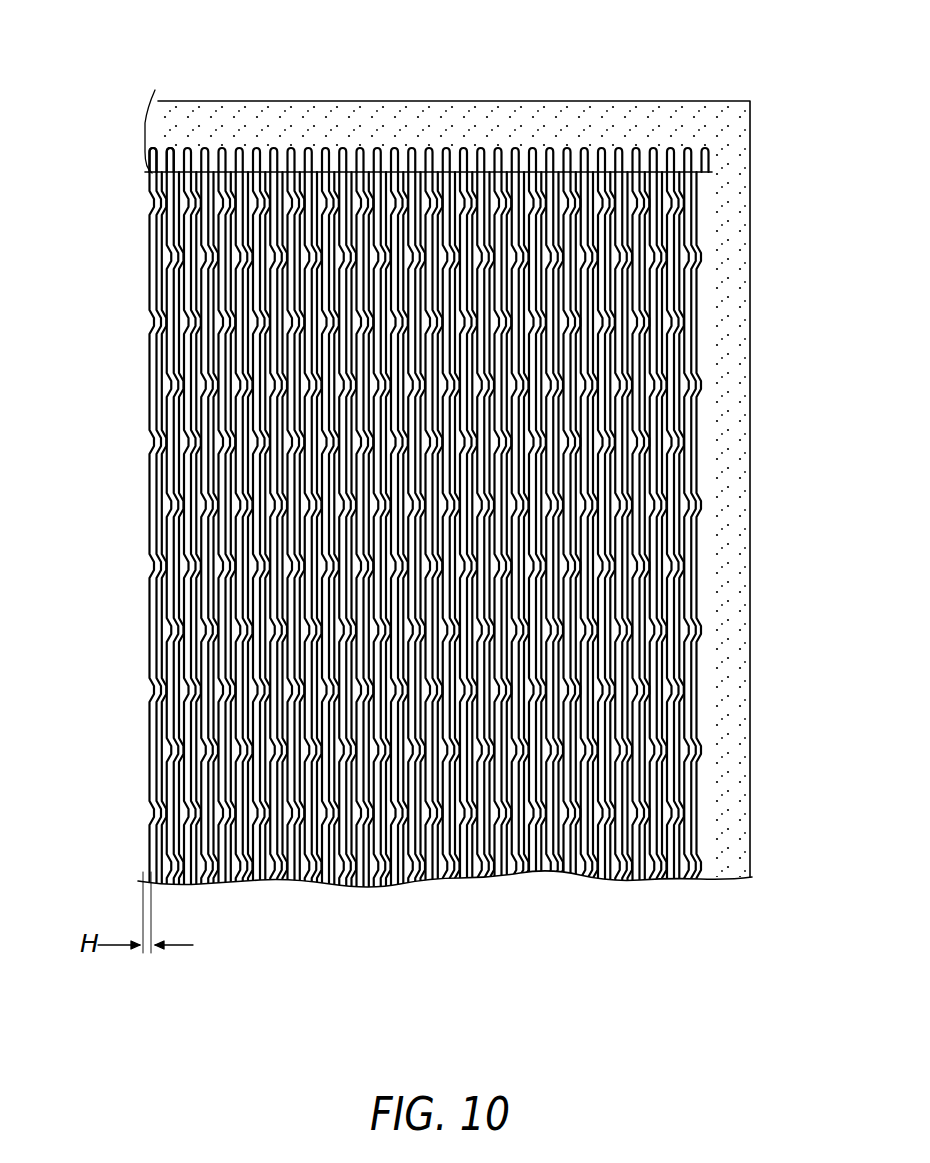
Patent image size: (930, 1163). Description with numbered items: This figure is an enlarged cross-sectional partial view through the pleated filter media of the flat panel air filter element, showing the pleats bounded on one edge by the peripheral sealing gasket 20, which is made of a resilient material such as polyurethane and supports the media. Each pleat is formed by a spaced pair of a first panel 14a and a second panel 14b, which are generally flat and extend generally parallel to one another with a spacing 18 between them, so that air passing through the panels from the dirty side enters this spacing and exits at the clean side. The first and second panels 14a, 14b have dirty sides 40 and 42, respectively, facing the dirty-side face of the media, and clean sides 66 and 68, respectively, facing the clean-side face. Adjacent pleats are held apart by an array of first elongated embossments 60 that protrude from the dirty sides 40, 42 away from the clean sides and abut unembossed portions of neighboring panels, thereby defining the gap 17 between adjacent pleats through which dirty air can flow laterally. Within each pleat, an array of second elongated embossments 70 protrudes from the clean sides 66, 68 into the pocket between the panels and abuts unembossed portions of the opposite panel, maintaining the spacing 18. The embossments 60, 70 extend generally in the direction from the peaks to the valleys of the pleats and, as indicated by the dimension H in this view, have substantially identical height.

The second elongated embossments 70 is at (185, 208).
The peripheral sealing gasket 20 is at (738, 172).
The first elongated embossments 60 is at (197, 322).
The dirty side of first panel 40 is at (200, 360).
The dirty side of second panel 42 is at (170, 415).
The clean side of second panel 68 is at (187, 472).
The clean side of first panel 66 is at (173, 507).
The spacing between panels 18 is at (317, 773).
The gap between adjacent pleats 17 is at (265, 862).
The second panel 14b is at (580, 852).
The first panel 14a is at (608, 810).